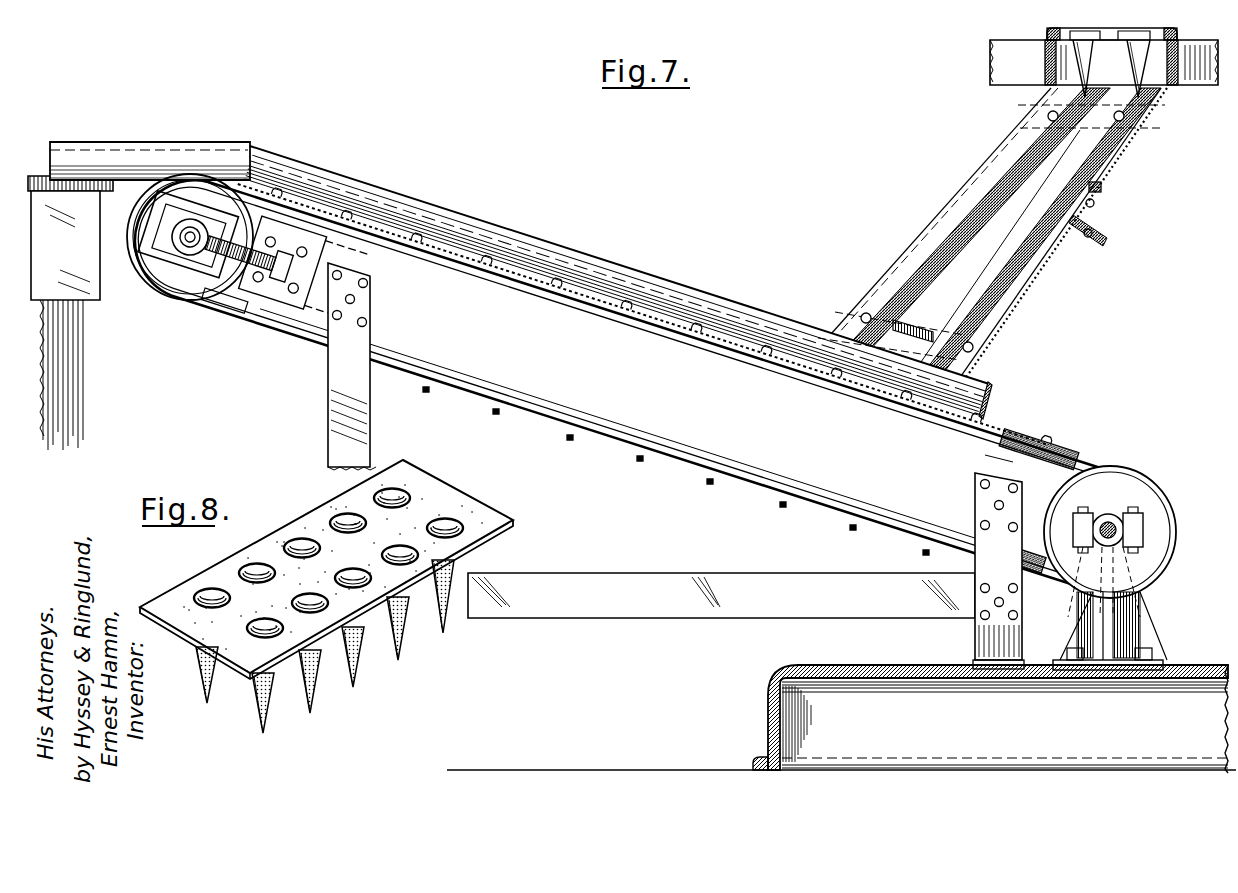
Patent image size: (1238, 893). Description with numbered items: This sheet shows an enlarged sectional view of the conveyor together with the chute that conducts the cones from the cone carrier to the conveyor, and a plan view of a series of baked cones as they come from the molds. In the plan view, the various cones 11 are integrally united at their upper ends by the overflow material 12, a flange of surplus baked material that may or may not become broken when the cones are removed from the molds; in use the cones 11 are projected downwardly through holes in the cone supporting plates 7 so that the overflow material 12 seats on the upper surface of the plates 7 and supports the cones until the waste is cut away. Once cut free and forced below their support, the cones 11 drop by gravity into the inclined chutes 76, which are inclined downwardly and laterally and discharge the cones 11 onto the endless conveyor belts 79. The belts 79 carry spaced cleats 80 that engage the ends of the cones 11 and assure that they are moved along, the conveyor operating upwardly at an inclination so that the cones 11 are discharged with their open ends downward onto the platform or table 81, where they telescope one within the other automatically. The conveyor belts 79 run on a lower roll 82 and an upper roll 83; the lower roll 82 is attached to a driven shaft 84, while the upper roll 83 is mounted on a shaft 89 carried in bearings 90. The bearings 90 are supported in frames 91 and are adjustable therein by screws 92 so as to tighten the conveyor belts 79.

In FIG. 7, the cone supporting plates 7 is at (1182, 670).
In FIG. 7, the cones 11 is at (1132, 36).
In FIG. 8, the cones 11 is at (262, 729).
In FIG. 7, the overflow material 12 is at (1168, 40).
In FIG. 8, the overflow material 12 is at (460, 510).
In FIG. 7, the inclined chutes 76 is at (953, 200).
In FIG. 7, the endless conveyor belts 79 is at (1027, 440).
In FIG. 7, the spaced cleats 80 is at (1130, 468).
In FIG. 7, the platform or table 81 is at (132, 176).
In FIG. 7, the lower roll 82 is at (1143, 503).
In FIG. 7, the upper roll 83 is at (192, 280).
In FIG. 7, the shaft 84 is at (1112, 526).
In FIG. 7, the shaft 89 is at (187, 235).
In FIG. 7, the bearings 90 is at (190, 248).
In FIG. 7, the frames 91 is at (150, 258).
In FIG. 7, the screws 92 is at (272, 272).